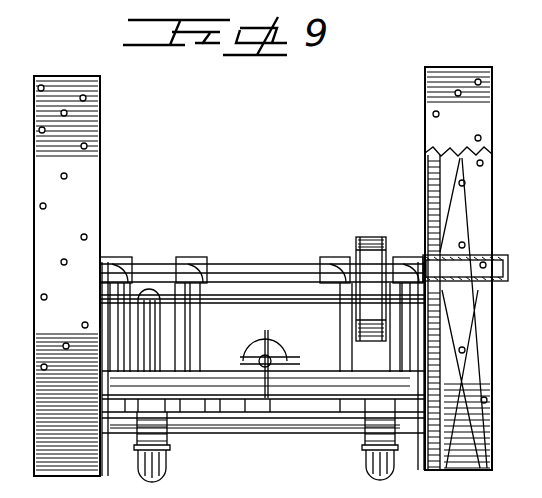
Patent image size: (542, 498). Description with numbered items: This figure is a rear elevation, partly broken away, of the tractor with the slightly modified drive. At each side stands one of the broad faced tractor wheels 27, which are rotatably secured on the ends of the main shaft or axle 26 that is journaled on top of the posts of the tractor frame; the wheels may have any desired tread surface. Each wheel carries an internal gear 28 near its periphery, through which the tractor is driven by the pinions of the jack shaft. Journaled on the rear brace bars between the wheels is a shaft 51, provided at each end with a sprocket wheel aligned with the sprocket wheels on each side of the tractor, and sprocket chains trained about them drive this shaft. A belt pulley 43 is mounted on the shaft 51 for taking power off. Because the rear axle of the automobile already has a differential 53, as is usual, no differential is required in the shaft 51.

The tractor wheels 27 is at (61, 76).
The internal gear 28 is at (436, 172).
The belt pulley 43 is at (371, 243).
The main shaft or axle 26 is at (262, 264).
The shaft 51 is at (290, 298).
The differential 53 is at (278, 357).